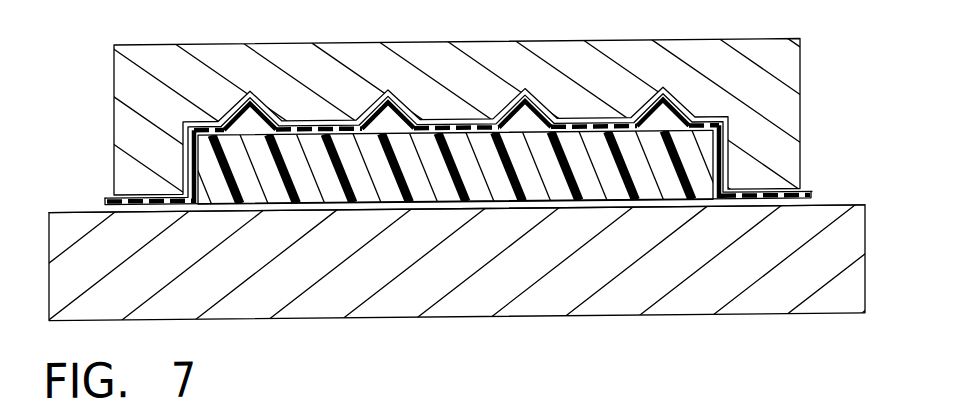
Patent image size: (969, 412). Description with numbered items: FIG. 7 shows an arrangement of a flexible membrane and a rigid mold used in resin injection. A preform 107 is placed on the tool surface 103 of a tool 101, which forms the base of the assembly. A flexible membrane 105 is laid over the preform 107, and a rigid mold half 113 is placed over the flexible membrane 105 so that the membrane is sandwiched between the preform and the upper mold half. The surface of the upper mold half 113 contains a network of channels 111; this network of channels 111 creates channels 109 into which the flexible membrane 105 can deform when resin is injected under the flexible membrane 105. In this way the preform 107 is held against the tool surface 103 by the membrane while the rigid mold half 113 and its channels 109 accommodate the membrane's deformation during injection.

The tool 101 is at (317, 305).
The tool surface 103 is at (821, 213).
The flexible membrane 105 is at (808, 199).
The preform 107 is at (510, 190).
The channels 109 is at (372, 120).
The network of channels 111 is at (378, 103).
The rigid mold half 113 is at (143, 100).